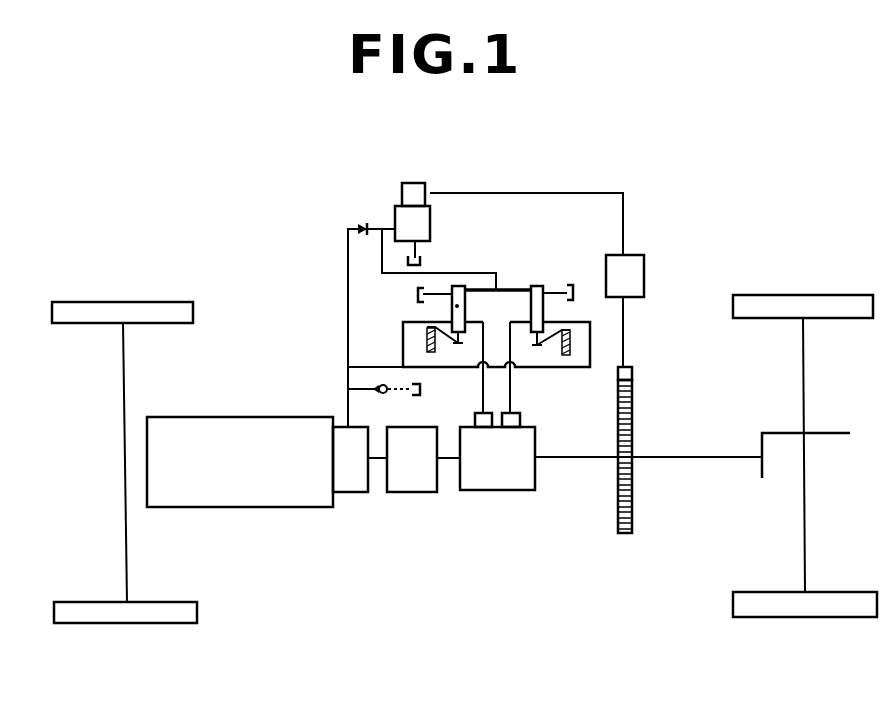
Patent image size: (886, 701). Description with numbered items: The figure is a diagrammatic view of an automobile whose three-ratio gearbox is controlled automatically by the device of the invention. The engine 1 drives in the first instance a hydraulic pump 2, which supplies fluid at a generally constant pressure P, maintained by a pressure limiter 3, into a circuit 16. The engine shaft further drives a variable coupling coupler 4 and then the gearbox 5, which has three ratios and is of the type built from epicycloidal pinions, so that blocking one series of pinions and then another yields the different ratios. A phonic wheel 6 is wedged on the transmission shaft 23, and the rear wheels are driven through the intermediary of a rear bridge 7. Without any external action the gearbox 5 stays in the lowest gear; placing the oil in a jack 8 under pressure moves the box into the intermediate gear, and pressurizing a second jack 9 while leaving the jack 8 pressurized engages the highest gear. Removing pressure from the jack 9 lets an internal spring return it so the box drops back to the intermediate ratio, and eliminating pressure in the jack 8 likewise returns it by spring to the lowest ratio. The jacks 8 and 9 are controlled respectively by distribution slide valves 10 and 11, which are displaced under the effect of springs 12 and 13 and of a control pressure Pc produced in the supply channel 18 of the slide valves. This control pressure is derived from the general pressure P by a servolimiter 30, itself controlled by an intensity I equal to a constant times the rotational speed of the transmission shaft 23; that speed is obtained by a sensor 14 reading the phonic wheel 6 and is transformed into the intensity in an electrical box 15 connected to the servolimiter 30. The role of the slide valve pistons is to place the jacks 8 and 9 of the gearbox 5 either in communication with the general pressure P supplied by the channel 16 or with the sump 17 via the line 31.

The engine 1 is at (250, 493).
The hydraulic pump 2 is at (352, 470).
The pressure limiter 3 is at (390, 386).
The variable coupling coupler 4 is at (417, 472).
The gearbox 5 is at (523, 493).
The phonic wheel 6 is at (632, 400).
The rear bridge 7 is at (803, 458).
The jack 8 is at (475, 420).
The jack 9 is at (520, 415).
The distribution slide valve 10 is at (453, 307).
The distribution slide valve 11 is at (537, 291).
The spring 12 is at (427, 338).
The spring 13 is at (568, 342).
The sensor 14 is at (632, 367).
The electrical box 15 is at (640, 273).
The circuit 16 is at (369, 366).
The sump 17 is at (418, 292).
The supply channel 18 is at (465, 273).
The transmission shaft 23 is at (655, 458).
The servolimiter 30 is at (405, 220).
The line 31 is at (509, 331).